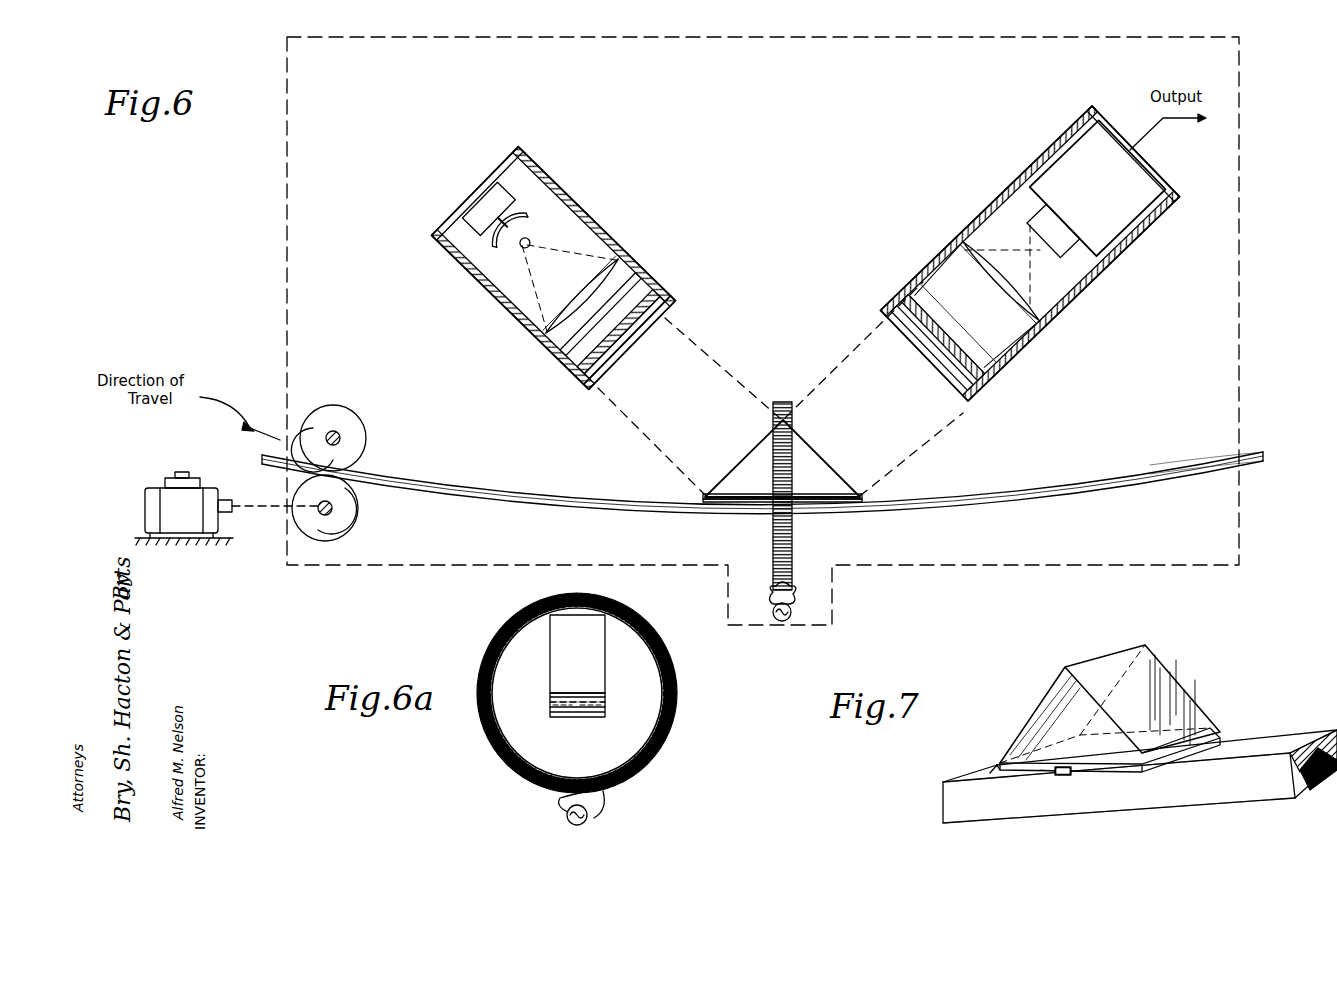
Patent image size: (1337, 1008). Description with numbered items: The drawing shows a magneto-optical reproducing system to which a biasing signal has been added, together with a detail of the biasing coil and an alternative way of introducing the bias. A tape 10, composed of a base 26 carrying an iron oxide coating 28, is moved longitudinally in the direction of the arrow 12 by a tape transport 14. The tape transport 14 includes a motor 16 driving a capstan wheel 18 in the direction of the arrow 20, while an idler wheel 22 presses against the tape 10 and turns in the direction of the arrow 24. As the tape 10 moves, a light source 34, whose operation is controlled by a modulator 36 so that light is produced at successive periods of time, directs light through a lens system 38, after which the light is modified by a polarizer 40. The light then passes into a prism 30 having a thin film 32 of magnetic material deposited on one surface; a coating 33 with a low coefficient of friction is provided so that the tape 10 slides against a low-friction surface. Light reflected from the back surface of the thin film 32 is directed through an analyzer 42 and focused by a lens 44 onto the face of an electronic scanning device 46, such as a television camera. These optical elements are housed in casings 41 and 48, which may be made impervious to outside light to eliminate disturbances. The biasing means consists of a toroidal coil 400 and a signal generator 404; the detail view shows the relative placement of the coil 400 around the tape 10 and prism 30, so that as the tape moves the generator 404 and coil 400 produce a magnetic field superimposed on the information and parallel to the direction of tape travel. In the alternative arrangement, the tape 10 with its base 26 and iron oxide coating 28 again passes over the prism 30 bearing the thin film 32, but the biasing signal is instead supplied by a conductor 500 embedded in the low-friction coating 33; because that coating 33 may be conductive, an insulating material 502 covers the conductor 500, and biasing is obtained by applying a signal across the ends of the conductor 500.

In FIG. 6, the tape 10 is at (1272, 456).
In FIG. 6A, the tape 10 is at (540, 716).
In FIG. 7, the tape 10 is at (918, 799).
In FIG. 6, the arrow 12 is at (244, 432).
In FIG. 6, the tape transport 14 is at (280, 525).
In FIG. 6, the motor 16 is at (203, 490).
In FIG. 6, the capstan wheel 18 is at (352, 519).
In FIG. 6, the arrow 20 is at (310, 528).
In FIG. 6, the idler wheel 22 is at (362, 442).
In FIG. 6, the arrow 24 is at (328, 415).
In FIG. 6, the base 26 is at (1187, 475).
In FIG. 6A, the base 26 is at (606, 716).
In FIG. 7, the base 26 is at (955, 806).
In FIG. 6, the iron oxide coating 28 is at (1187, 470).
In FIG. 6A, the iron oxide coating 28 is at (606, 708).
In FIG. 7, the iron oxide coating 28 is at (940, 783).
In FIG. 6, the prism 30 is at (805, 452).
In FIG. 6A, the prism 30 is at (559, 652).
In FIG. 7, the prism 30 is at (1185, 690).
In FIG. 6, the thin film 32 is at (847, 491).
In FIG. 6A, the thin film 32 is at (596, 696).
In FIG. 7, the thin film 32 is at (1014, 760).
In FIG. 6, the coating 33 is at (862, 498).
In FIG. 6A, the coating 33 is at (606, 701).
In FIG. 7, the coating 33 is at (991, 772).
In FIG. 6, the light source 34 is at (530, 218).
In FIG. 6, the modulator 36 is at (497, 203).
In FIG. 6, the lens system 38 is at (620, 270).
In FIG. 6, the polarizer 40 is at (612, 383).
In FIG. 6, the casing 41 is at (600, 234).
In FIG. 6, the analyzer 42 is at (947, 392).
In FIG. 6, the lens 44 is at (1020, 300).
In FIG. 6, the electronic scanning device 46 is at (1089, 198).
In FIG. 6, the casing 48 is at (1008, 190).
In FIG. 6, the toroidal coil 400 is at (784, 402).
In FIG. 6A, the toroidal coil 400 is at (649, 628).
In FIG. 6, the signal generator 404 is at (770, 626).
In FIG. 6A, the signal generator 404 is at (588, 816).
In FIG. 6A, the conductor 500 is at (556, 728).
In FIG. 7, the conductor 500 is at (1068, 778).
In FIG. 6A, the insulating material 502 is at (598, 726).
In FIG. 7, the insulating material 502 is at (1055, 774).